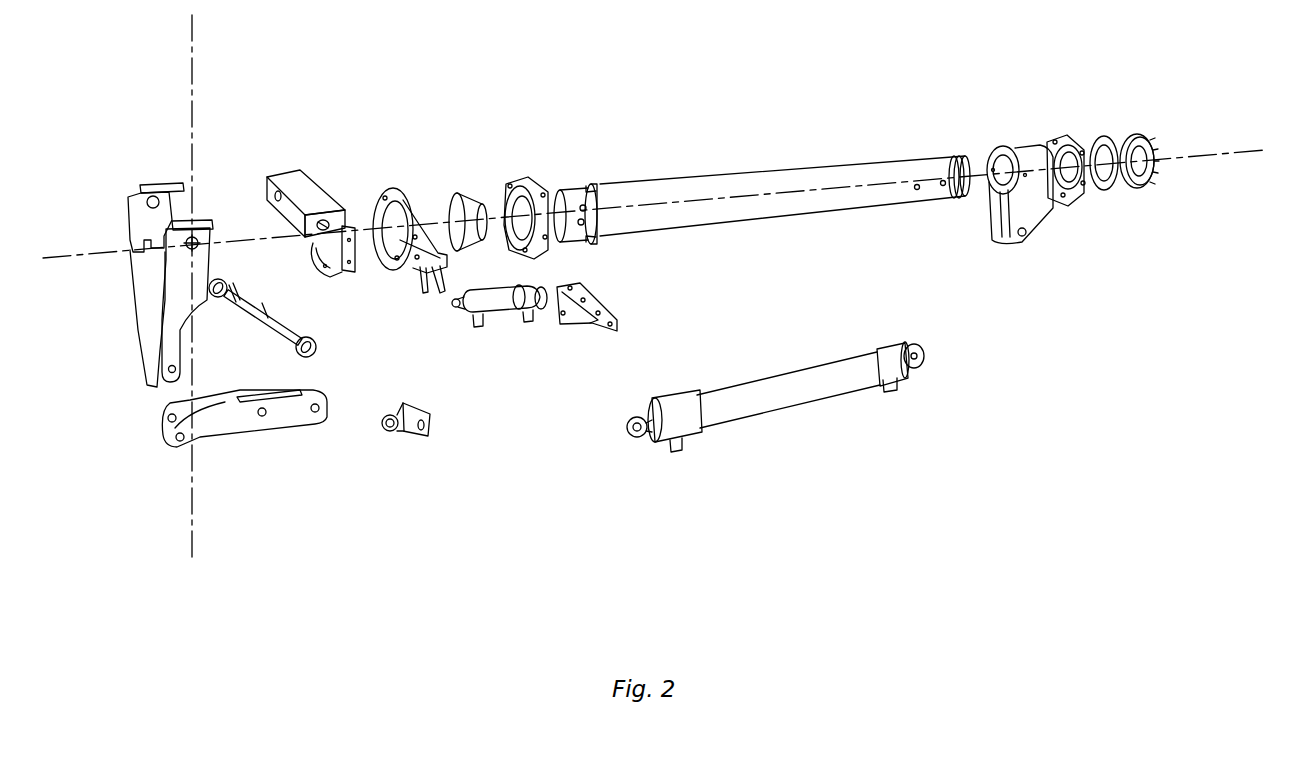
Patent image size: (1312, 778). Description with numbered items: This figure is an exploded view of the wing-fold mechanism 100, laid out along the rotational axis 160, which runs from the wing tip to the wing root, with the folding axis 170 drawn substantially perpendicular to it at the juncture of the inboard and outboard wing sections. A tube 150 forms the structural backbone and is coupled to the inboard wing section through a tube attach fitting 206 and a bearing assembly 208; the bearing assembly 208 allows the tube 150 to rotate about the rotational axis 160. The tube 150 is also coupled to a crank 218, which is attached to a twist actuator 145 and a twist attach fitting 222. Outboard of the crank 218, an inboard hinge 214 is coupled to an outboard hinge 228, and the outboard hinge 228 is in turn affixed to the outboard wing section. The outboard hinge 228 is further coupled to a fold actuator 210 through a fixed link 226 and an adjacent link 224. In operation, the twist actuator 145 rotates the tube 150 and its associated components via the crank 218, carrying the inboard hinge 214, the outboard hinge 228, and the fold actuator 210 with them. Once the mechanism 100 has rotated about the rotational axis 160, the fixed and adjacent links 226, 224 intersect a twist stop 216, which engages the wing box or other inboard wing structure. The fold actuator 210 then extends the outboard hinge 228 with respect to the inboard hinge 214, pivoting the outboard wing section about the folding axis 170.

The wing-fold mechanism 100 is at (677, 602).
The twist actuator 145 is at (499, 318).
The tube 150 is at (811, 167).
The rotational axis 160 is at (1243, 152).
The folding axis 170 is at (193, 537).
The tube attach fitting 206 is at (1013, 149).
The bearing assembly 208 is at (534, 181).
The fold actuator 210 is at (789, 400).
The inboard hinge 214 is at (296, 176).
The twist stop 216 is at (412, 404).
The crank 218 is at (395, 185).
The twist attach fitting 222 is at (598, 296).
The adjacent link 224 is at (250, 296).
The fixed link 226 is at (228, 437).
The outboard hinge 228 is at (157, 187).